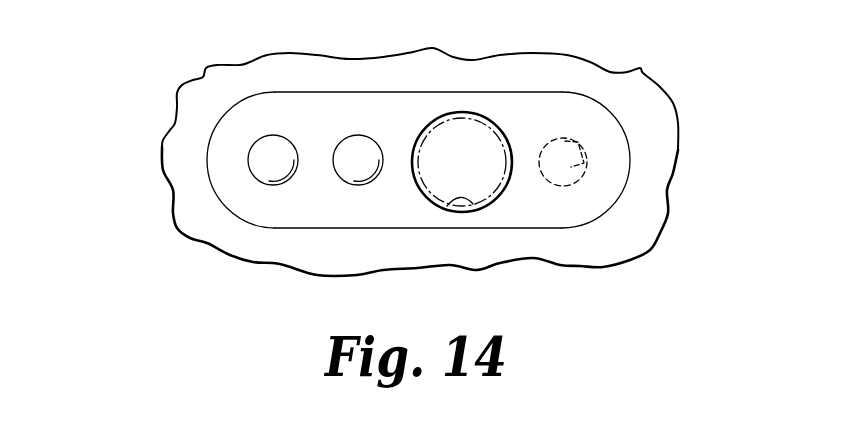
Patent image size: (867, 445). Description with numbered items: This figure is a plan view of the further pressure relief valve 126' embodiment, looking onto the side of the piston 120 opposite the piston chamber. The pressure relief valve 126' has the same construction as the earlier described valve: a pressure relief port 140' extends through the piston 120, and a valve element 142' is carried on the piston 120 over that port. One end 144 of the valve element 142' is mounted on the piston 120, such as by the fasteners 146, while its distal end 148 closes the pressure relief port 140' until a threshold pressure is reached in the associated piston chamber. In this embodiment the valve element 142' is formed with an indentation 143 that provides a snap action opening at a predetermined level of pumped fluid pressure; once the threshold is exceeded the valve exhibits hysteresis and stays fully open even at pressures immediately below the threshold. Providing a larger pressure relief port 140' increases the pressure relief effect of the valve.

The piston 120 is at (183, 196).
The pressure relief valve 126' is at (420, 75).
The valve element 142' is at (418, 114).
The indentation 143 is at (473, 205).
The end of valve element 144 is at (240, 191).
The fasteners 146 is at (350, 133).
The distal end of valve element 148 is at (598, 208).
The pressure relief port 140' is at (646, 162).